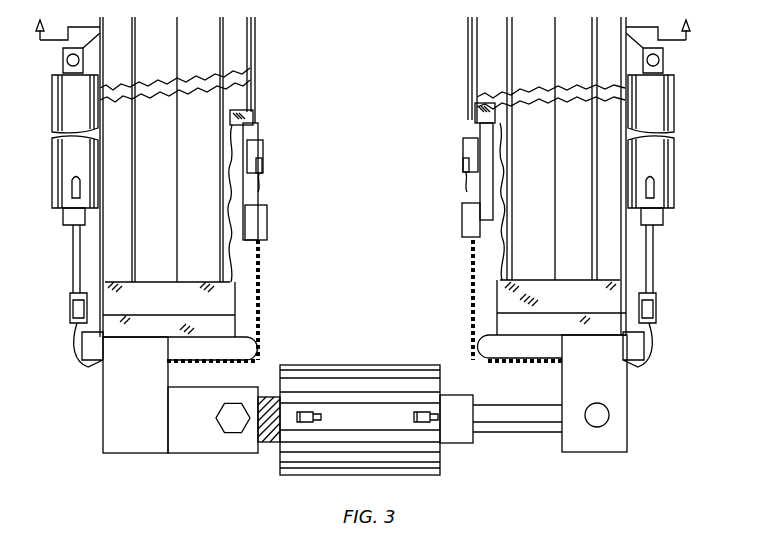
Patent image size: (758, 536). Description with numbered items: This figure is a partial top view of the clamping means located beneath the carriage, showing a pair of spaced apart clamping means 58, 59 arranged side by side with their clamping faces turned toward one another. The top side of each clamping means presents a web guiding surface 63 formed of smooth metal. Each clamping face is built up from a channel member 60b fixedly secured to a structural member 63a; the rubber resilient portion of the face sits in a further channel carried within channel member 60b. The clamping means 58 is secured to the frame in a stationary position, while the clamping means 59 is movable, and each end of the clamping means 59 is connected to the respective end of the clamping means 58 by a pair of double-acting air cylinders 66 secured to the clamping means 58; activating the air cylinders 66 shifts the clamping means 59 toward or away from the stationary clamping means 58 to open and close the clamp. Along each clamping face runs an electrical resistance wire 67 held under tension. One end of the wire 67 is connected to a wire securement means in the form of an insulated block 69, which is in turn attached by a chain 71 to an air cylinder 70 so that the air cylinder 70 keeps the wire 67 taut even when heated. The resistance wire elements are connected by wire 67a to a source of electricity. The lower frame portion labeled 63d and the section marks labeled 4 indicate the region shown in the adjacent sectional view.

The section line 4- 4 is at (361, 30).
The clamping means 58 is at (447, 243).
The clamping means 59 is at (283, 243).
The channel member 60b is at (252, 114).
The web guiding surface 63 is at (244, 54).
The structural member 63a is at (495, 283).
The left panel lower frame portion 63d is at (236, 308).
The double-acting air cylinders 66 is at (365, 365).
The wire 67 is at (257, 124).
The wire 67a is at (262, 165).
The insulated block 69 is at (263, 146).
The air cylinder 70 is at (58, 213).
The chain 71 is at (260, 312).